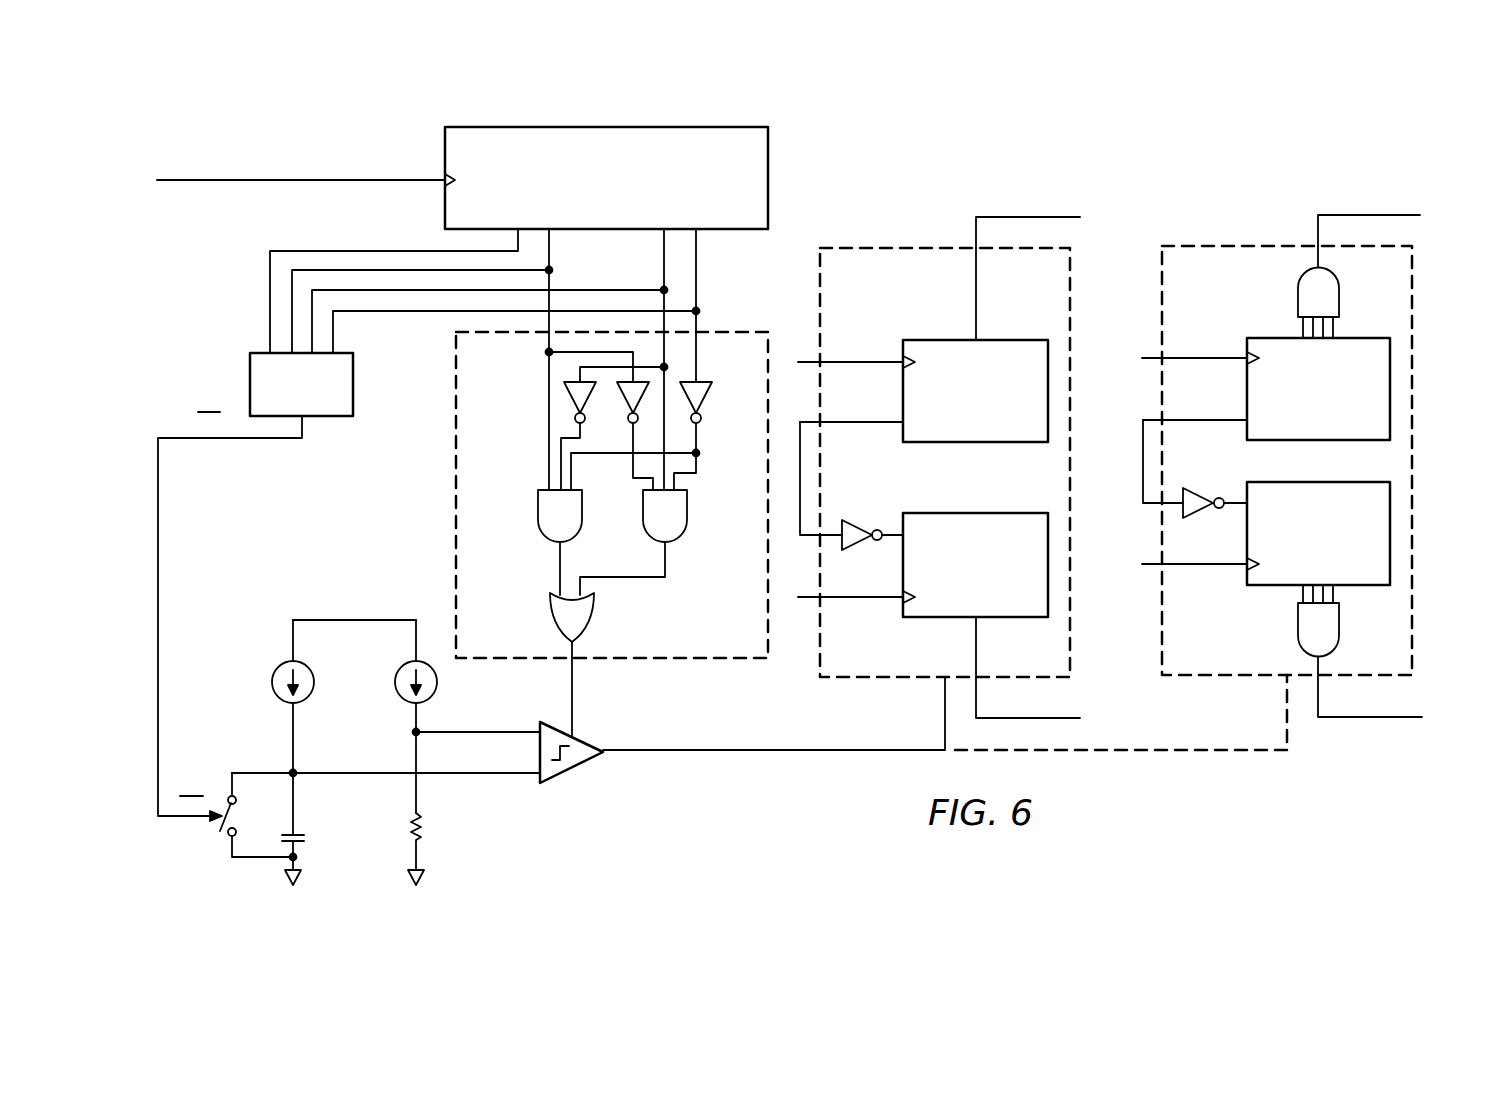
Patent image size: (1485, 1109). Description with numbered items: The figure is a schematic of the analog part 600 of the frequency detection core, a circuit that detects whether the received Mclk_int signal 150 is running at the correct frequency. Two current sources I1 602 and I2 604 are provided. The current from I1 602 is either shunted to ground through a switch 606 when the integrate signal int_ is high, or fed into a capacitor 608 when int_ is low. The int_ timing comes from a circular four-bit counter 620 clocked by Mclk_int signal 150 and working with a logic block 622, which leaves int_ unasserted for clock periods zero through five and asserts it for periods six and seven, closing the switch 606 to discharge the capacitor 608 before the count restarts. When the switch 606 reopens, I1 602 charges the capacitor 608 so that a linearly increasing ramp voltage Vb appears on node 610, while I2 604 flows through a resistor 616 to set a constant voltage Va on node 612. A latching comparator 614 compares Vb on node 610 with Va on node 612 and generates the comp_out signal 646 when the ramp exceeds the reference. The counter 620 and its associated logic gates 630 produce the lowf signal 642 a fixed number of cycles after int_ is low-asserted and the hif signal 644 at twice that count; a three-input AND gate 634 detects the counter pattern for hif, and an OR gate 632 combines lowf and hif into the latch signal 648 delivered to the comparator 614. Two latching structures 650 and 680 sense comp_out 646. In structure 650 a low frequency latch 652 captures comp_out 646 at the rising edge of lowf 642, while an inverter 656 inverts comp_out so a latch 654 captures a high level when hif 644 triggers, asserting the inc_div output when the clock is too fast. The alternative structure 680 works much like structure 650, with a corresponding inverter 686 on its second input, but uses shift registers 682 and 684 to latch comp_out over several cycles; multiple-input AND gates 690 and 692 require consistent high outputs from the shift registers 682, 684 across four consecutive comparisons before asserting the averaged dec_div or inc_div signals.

The Mclk_int signal 150 is at (197, 180).
The analog part 600 is at (1200, 199).
The current source I1 602 is at (280, 666).
The current source I2 604 is at (396, 700).
The switch 606 is at (232, 845).
The capacitor 608 is at (298, 834).
The node Vb 610 is at (288, 770).
The node Va 612 is at (412, 735).
The comparator 614 is at (572, 776).
The resistor 616 is at (422, 830).
The counter 620 is at (768, 148).
The logic block 622 is at (250, 385).
The logic gates 630 is at (456, 462).
The OR gate 632 is at (687, 512).
The three-input AND gate 634 is at (538, 505).
The lowf signal 642 is at (623, 578).
The hif signal 644 is at (563, 565).
The comp_out signal 646 is at (750, 755).
The latch signal 648 is at (575, 700).
The latching structure 650 is at (1070, 330).
The low frequency latch 652 is at (945, 340).
The latch 654 is at (945, 618).
The inverter 656 is at (858, 520).
The alternative latching structure 680 is at (1412, 330).
The shift register 682 is at (1357, 338).
The shift register 684 is at (1357, 585).
The inverter 686 is at (1205, 488).
The multiple-input AND gate 690 is at (1298, 300).
The multiple-input AND gate 692 is at (1298, 633).